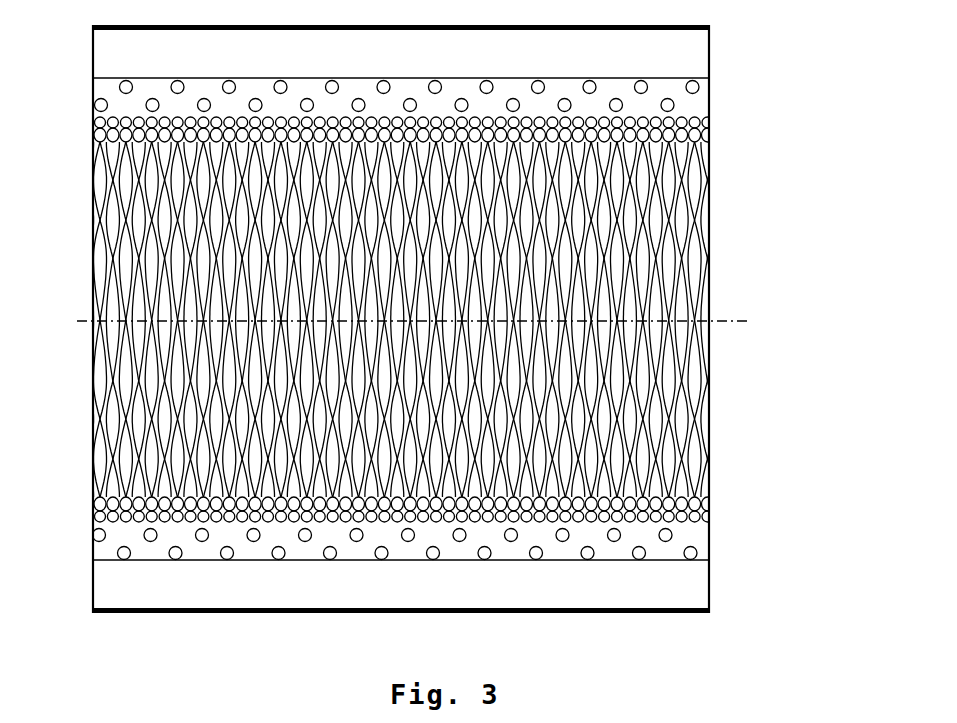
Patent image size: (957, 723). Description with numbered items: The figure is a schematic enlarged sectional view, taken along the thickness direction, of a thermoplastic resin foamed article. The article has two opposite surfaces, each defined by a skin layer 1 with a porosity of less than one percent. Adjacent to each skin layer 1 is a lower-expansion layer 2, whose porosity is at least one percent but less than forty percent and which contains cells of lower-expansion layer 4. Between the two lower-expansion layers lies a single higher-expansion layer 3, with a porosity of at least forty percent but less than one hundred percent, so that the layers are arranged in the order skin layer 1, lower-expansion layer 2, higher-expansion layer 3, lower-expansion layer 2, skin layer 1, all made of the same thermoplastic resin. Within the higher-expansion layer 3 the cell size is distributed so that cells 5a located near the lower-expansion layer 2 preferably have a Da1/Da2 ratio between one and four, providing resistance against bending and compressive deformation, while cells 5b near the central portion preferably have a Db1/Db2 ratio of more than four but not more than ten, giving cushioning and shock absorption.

The skin layer 1 is at (88, 27).
The lower-expansion layer 2 is at (88, 78).
The higher-expansion layer 3 is at (449, 314).
The cells of lower-expansion layer 4 is at (678, 104).
The cells located in higher-expansion layer near a lower-expansion layer 5a is at (688, 143).
The cells located near a central portion in higher-expansion layer 5b is at (672, 312).